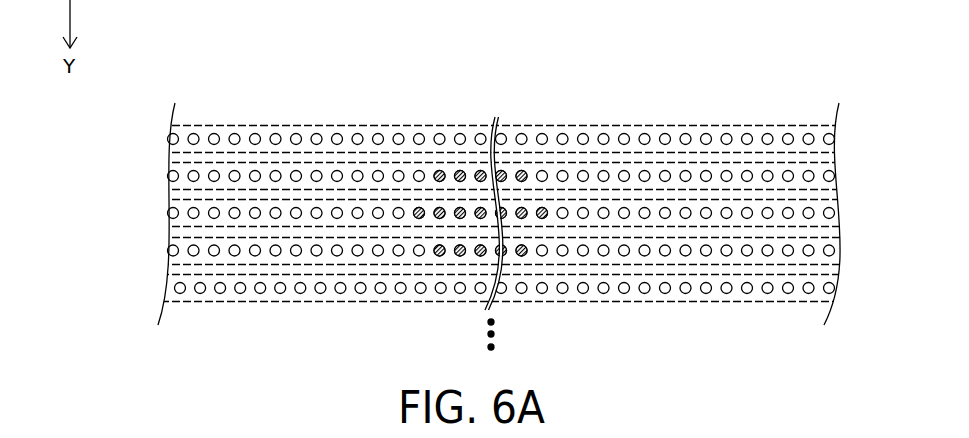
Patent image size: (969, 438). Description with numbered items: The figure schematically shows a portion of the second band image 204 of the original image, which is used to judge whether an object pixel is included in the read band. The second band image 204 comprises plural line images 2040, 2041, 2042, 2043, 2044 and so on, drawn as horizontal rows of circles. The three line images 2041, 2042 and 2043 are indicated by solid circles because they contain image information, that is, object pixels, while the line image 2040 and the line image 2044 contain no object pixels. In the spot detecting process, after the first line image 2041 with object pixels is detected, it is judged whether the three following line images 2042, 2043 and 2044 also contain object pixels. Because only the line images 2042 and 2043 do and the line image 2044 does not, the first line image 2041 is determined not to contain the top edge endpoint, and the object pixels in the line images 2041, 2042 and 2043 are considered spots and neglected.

The second band image 204 is at (476, 198).
The line image 2040 is at (242, 126).
The first line image 2041 is at (220, 163).
The line image 2042 is at (222, 200).
The line image 2043 is at (222, 238).
The line image 2044 is at (222, 274).